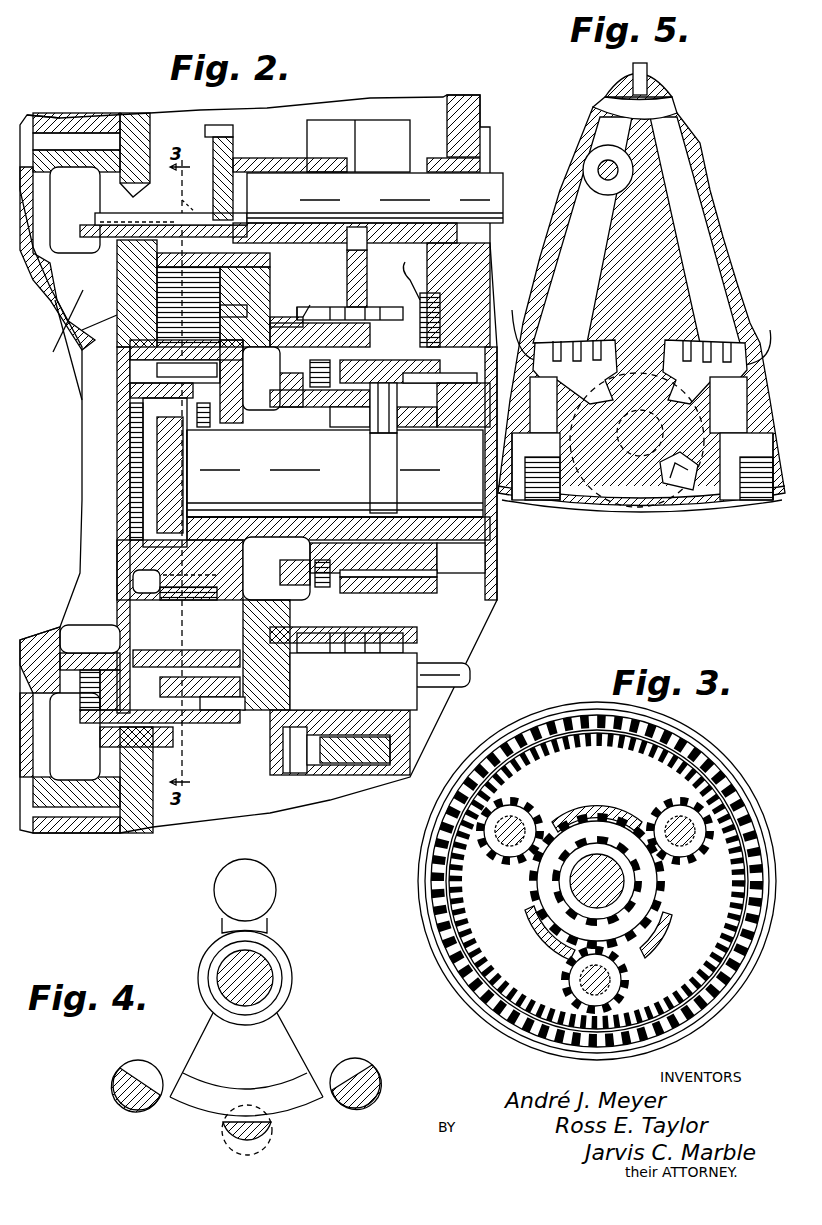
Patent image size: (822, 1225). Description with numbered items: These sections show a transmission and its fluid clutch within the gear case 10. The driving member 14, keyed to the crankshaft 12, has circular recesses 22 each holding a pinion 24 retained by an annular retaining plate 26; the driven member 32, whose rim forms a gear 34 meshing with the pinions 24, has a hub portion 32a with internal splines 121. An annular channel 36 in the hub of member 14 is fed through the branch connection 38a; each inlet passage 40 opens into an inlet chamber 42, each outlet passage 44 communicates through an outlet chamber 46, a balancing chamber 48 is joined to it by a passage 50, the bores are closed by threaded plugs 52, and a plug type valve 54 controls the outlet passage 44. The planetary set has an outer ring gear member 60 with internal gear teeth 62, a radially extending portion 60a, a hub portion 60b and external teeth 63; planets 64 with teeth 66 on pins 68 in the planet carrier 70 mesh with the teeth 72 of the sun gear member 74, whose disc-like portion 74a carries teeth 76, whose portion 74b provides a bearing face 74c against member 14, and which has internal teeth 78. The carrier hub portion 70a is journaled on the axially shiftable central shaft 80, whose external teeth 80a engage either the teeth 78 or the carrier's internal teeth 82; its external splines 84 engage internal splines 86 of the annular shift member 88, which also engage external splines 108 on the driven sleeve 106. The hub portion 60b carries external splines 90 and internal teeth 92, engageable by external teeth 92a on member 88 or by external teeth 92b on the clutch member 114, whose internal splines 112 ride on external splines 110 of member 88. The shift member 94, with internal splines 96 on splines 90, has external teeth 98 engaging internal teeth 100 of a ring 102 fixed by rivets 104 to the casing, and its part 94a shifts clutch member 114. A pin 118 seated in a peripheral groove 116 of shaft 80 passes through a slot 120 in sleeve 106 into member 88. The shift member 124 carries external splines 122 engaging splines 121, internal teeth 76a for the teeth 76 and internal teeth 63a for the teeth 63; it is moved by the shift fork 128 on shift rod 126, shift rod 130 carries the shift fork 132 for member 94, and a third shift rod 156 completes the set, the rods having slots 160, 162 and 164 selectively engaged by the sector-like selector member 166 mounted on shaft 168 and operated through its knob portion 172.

In FIG. 2, the gear case 10 is at (375, 772).
In FIG. 5, the crankshaft 12 is at (615, 72).
In FIG. 2, the driving member 14 is at (40, 263).
In FIG. 5, the driving member 14 is at (705, 177).
In FIG. 5, the circular recesses 22 is at (615, 505).
In FIG. 2, the pinion 24 is at (68, 120).
In FIG. 5, the pinion 24 is at (700, 370).
In FIG. 2, the annular retaining plate 26 is at (133, 120).
In FIG. 2, the driven member 32 is at (40, 116).
In FIG. 2, the hub portion 32a is at (95, 205).
In FIG. 3, the hub portion 32a is at (583, 715).
In FIG. 5, the gear 34 is at (558, 370).
In FIG. 5, the annular channel 36 is at (680, 100).
In FIG. 5, the branch connection 38a is at (650, 75).
In FIG. 5, the inlet passage 40 is at (693, 255).
In FIG. 5, the inlet chamber 42 is at (762, 338).
In FIG. 5, the outlet passage 44 is at (585, 250).
In FIG. 5, the outlet chamber 46 is at (517, 328).
In FIG. 5, the balancing chamber 48 is at (690, 492).
In FIG. 5, the passage 50 is at (648, 505).
In FIG. 5, the threaded plugs 52 is at (548, 500).
In FIG. 5, the plug type valve 54 is at (600, 167).
In FIG. 2, the outer ring gear member 60 is at (268, 263).
In FIG. 3, the outer ring gear member 60 is at (540, 928).
In FIG. 2, the radially extending portion 60a is at (260, 285).
In FIG. 2, the hub portion 60b is at (312, 300).
In FIG. 2, the internal gear teeth 62 is at (205, 275).
In FIG. 3, the internal gear teeth 62 is at (675, 960).
In FIG. 2, the external teeth 63 is at (160, 695).
In FIG. 3, the external teeth 63 is at (705, 760).
In FIG. 2, the internal teeth 63a is at (245, 705).
In FIG. 2, the planets 64 is at (160, 593).
In FIG. 3, the planets 64 is at (530, 812).
In FIG. 3, the planet teeth 66 is at (505, 850).
In FIG. 2, the pins 68 is at (130, 635).
In FIG. 3, the pins 68 is at (592, 815).
In FIG. 2, the planet carrier 70 is at (130, 340).
In FIG. 3, the planet carrier 70 is at (655, 940).
In FIG. 2, the hub portion 70a is at (292, 425).
In FIG. 2, the sun gear teeth 72 is at (160, 372).
In FIG. 3, the sun gear teeth 72 is at (525, 912).
In FIG. 2, the sun gear member 74 is at (130, 365).
In FIG. 3, the sun gear member 74 is at (605, 836).
In FIG. 2, the radially extending disc-like portion 74a is at (117, 312).
In FIG. 2, the axially extending portion 74b is at (51, 350).
In FIG. 2, the bearing face 74c is at (70, 300).
In FIG. 2, the teeth 76 is at (122, 255).
In FIG. 2, the internal teeth 76a is at (82, 712).
In FIG. 2, the internal teeth 78 is at (130, 412).
In FIG. 2, the central shaft 80 is at (255, 470).
In FIG. 3, the central shaft 80 is at (620, 885).
In FIG. 2, the external teeth 80a is at (170, 538).
In FIG. 3, the external teeth 80a is at (655, 905).
In FIG. 2, the internal teeth 82 is at (235, 425).
In FIG. 2, the external splines 84 is at (280, 400).
In FIG. 2, the internal splines 86 is at (276, 568).
In FIG. 2, the annular shift member 88 is at (344, 565).
In FIG. 2, the external splines 90 is at (300, 325).
In FIG. 2, the internal teeth 92 is at (360, 340).
In FIG. 2, the external teeth 92a is at (283, 375).
In FIG. 2, the external teeth 92b is at (360, 643).
In FIG. 2, the shift member 94 is at (372, 305).
In FIG. 2, the part 94a is at (365, 630).
In FIG. 2, the internal splines 96 is at (300, 345).
In FIG. 2, the external teeth 98 is at (407, 272).
In FIG. 2, the internal teeth 100 is at (432, 315).
In FIG. 2, the ring 102 is at (470, 262).
In FIG. 2, the rivets 104 is at (470, 675).
In FIG. 2, the sleeve 106 is at (440, 525).
In FIG. 2, the external splines 108 is at (455, 540).
In FIG. 2, the external splines 110 is at (415, 395).
In FIG. 2, the internal splines 112 is at (430, 380).
In FIG. 2, the shiftable clutch member 114 is at (440, 585).
In FIG. 2, the peripheral groove 116 is at (378, 480).
In FIG. 2, the radially extending pin 118 is at (372, 433).
In FIG. 2, the longitudinally extending slot 120 is at (360, 420).
In FIG. 2, the internal splines 121 is at (200, 201).
In FIG. 3, the internal splines 121 is at (740, 785).
In FIG. 2, the external splines 122 is at (95, 218).
In FIG. 3, the external splines 122 is at (690, 740).
In FIG. 2, the shift member 124 is at (86, 230).
In FIG. 3, the shift member 124 is at (728, 770).
In FIG. 2, the shift rod 126 is at (490, 198).
In FIG. 4, the shift rod 126 is at (260, 1150).
In FIG. 2, the shift fork 128 is at (213, 140).
In FIG. 2, the second shift rod 130 is at (425, 128).
In FIG. 4, the second shift rod 130 is at (355, 1105).
In FIG. 2, the shift fork 132 is at (362, 250).
In FIG. 4, the third shift rod 156 is at (142, 1108).
In FIG. 4, the transversely extending slot 160 is at (272, 1118).
In FIG. 4, the slot 162 is at (352, 1062).
In FIG. 4, the slot 164 is at (145, 1068).
In FIG. 4, the selector member 166 is at (285, 1045).
In FIG. 4, the shaft 168 is at (272, 975).
In FIG. 4, the knob portion 172 is at (270, 892).